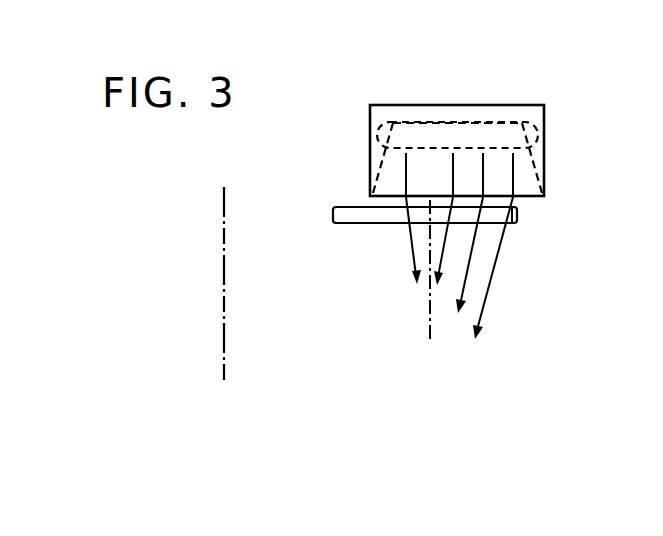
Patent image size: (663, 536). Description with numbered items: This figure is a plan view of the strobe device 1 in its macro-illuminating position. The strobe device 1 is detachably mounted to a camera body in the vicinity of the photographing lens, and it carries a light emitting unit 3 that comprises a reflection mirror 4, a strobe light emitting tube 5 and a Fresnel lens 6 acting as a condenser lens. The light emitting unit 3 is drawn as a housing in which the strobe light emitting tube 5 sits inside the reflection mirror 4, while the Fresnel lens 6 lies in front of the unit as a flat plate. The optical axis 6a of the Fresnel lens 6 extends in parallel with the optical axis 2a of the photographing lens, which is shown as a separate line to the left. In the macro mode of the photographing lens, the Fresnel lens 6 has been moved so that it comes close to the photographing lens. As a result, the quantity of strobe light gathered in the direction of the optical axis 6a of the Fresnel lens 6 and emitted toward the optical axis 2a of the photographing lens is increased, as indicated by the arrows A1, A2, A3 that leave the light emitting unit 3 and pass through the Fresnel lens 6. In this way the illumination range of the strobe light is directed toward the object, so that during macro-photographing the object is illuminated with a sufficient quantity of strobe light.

The strobe device 1 is at (460, 98).
The optical axis of the photographing lens 2a is at (224, 340).
The light emitting unit 3 is at (370, 150).
The reflection mirror 4 is at (545, 162).
The strobe light emitting tube 5 is at (540, 112).
The Fresnel lens 6 is at (517, 218).
The optical axis of the Fresnel lens 6a is at (430, 322).
The arrow A1 is at (448, 247).
The arrow A2 is at (470, 282).
The arrow A3 is at (480, 327).